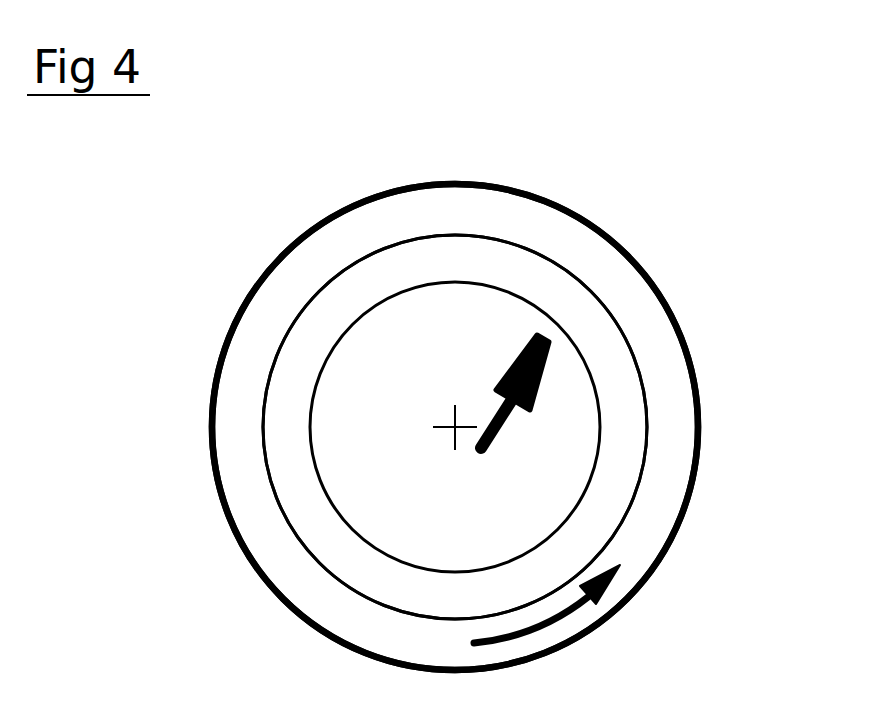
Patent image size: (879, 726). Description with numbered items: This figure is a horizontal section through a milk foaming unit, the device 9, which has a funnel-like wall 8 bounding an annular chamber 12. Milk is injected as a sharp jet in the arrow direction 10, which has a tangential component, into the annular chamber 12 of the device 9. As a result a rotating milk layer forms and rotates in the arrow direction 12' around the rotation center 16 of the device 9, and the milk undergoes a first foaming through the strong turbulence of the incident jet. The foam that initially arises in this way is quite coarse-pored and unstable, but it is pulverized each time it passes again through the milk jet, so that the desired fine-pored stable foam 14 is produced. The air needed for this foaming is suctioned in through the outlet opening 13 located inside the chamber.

The funnel-like wall 8 is at (702, 453).
The device 9 is at (647, 527).
The arrow direction 10 is at (548, 347).
The annular chamber 12 is at (510, 350).
The arrow direction 12' is at (592, 630).
The outlet opening 13 is at (528, 510).
The fine-pored stable foam 14 is at (560, 295).
The rotation center 16 is at (455, 427).